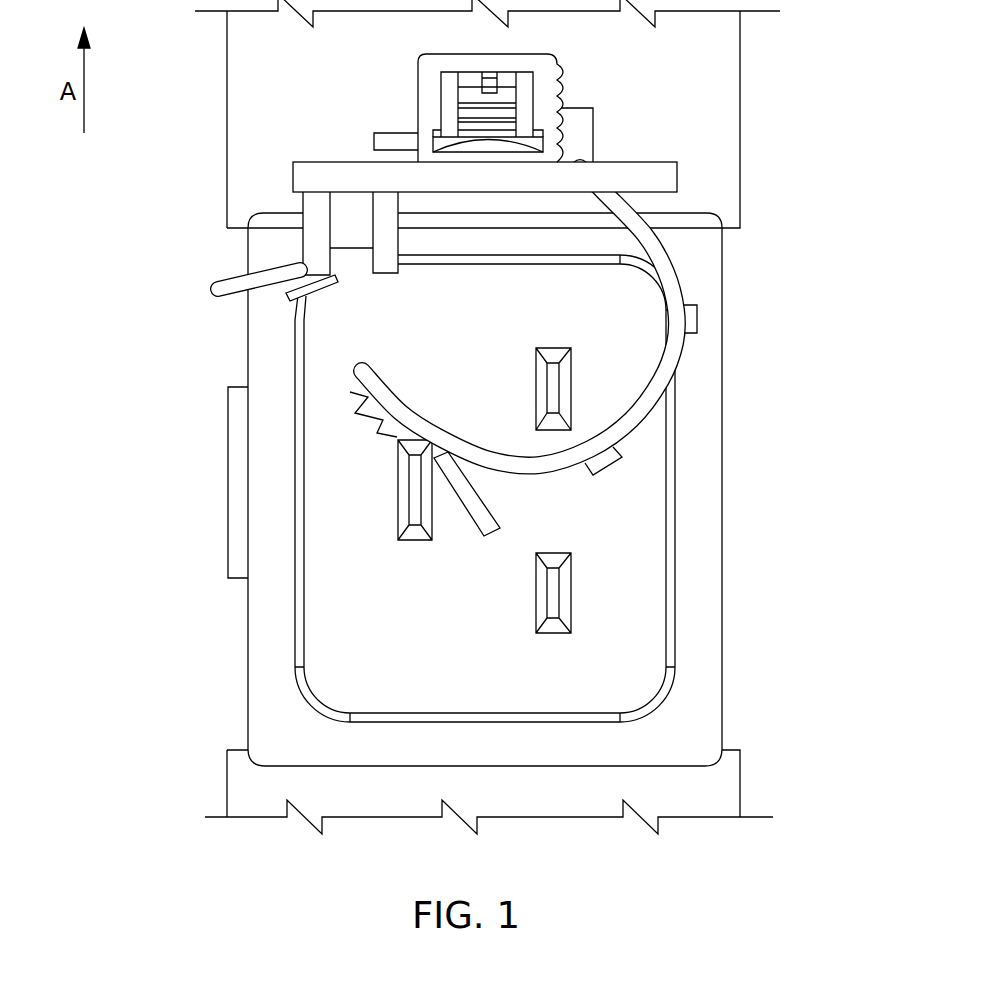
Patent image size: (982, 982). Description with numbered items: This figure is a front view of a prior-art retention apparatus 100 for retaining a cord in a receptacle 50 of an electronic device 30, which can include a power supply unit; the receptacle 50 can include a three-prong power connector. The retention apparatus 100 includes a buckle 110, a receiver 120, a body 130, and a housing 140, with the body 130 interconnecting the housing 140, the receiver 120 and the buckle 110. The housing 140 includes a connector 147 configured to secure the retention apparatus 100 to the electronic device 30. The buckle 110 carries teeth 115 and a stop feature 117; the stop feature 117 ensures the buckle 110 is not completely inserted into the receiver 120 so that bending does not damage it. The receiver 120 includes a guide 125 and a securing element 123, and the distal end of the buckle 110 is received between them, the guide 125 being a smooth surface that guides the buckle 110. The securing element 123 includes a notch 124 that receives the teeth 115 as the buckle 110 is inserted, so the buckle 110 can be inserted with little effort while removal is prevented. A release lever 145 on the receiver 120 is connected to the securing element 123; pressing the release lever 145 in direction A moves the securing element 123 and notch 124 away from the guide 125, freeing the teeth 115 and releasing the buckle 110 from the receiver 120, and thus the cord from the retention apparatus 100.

The retention apparatus 100 is at (652, 127).
The electronic device 30 is at (240, 173).
The receiver 120 is at (277, 228).
The buckle 110 is at (672, 282).
The teeth 115 is at (383, 417).
The receptacle 50 is at (365, 514).
The stop feature 117 is at (690, 320).
The body 130 is at (648, 180).
The notch 124 is at (350, 262).
The guide 125 is at (390, 272).
The housing 140 is at (428, 95).
The connector 147 is at (410, 133).
The release lever 145 is at (213, 292).
The securing element 123 is at (287, 293).